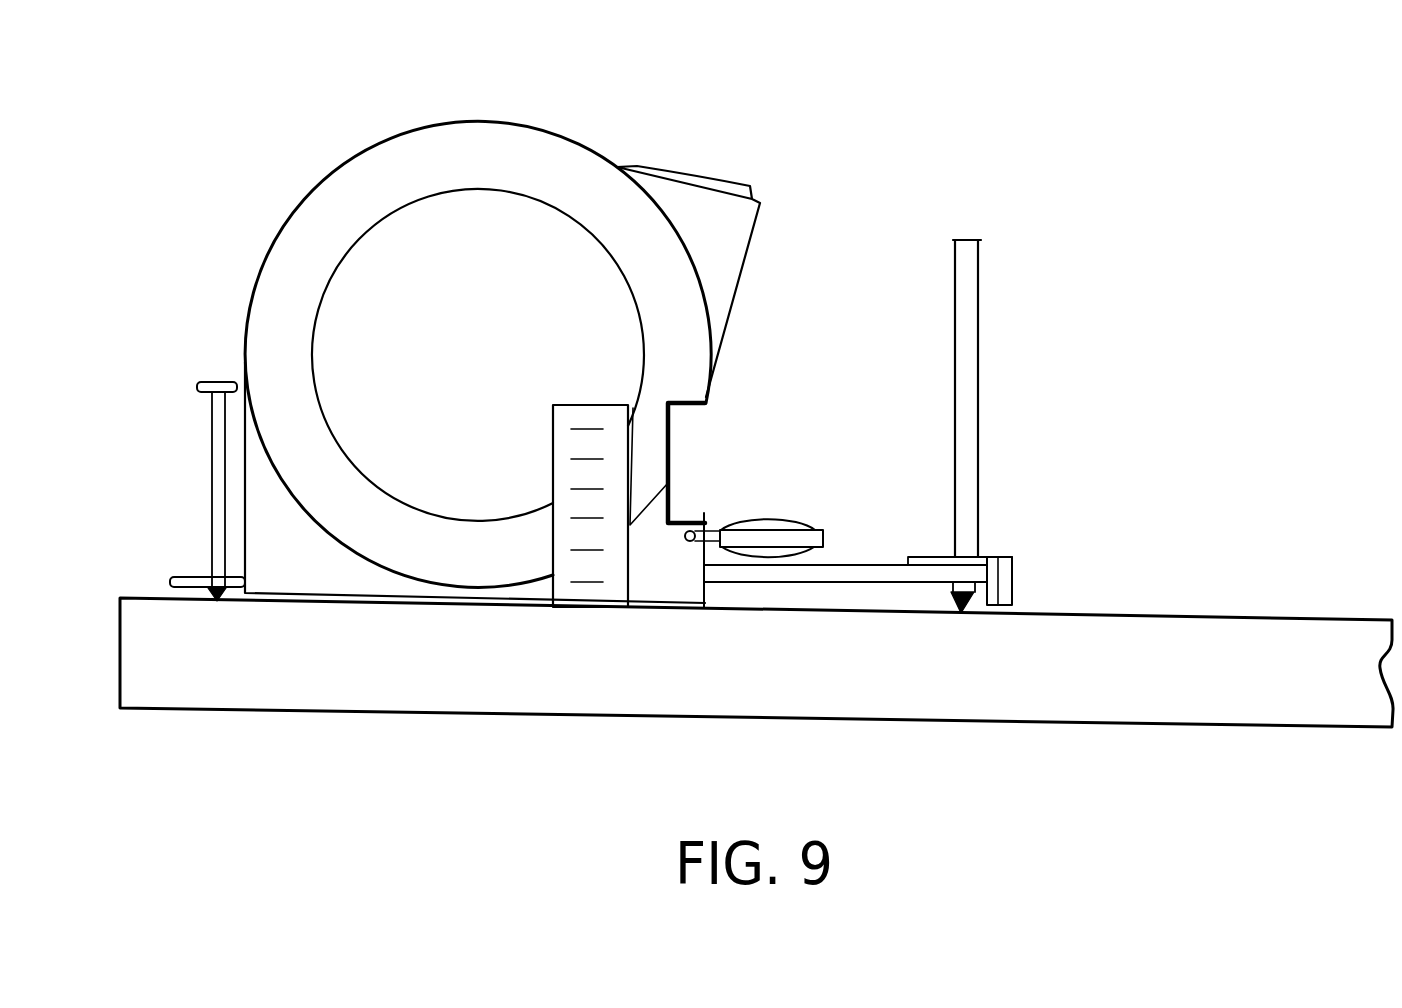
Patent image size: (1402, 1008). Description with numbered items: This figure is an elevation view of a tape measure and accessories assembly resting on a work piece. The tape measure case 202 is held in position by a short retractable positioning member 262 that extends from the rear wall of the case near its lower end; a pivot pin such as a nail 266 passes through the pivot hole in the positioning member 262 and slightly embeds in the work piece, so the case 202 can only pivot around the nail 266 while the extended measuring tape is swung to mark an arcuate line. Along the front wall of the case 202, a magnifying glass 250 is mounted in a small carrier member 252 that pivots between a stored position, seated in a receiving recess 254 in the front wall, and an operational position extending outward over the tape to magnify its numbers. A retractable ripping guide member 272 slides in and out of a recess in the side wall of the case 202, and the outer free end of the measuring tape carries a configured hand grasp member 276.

The tape measure case 202 is at (572, 140).
The nail 266 is at (212, 418).
The retractable positioning member 262 is at (183, 576).
The retractable ripping guide member 272 is at (566, 476).
The receiving recess 254 is at (693, 453).
The magnifying glass 250 is at (757, 521).
The carrier member 252 is at (780, 537).
The hand grasp member 276 is at (1013, 575).